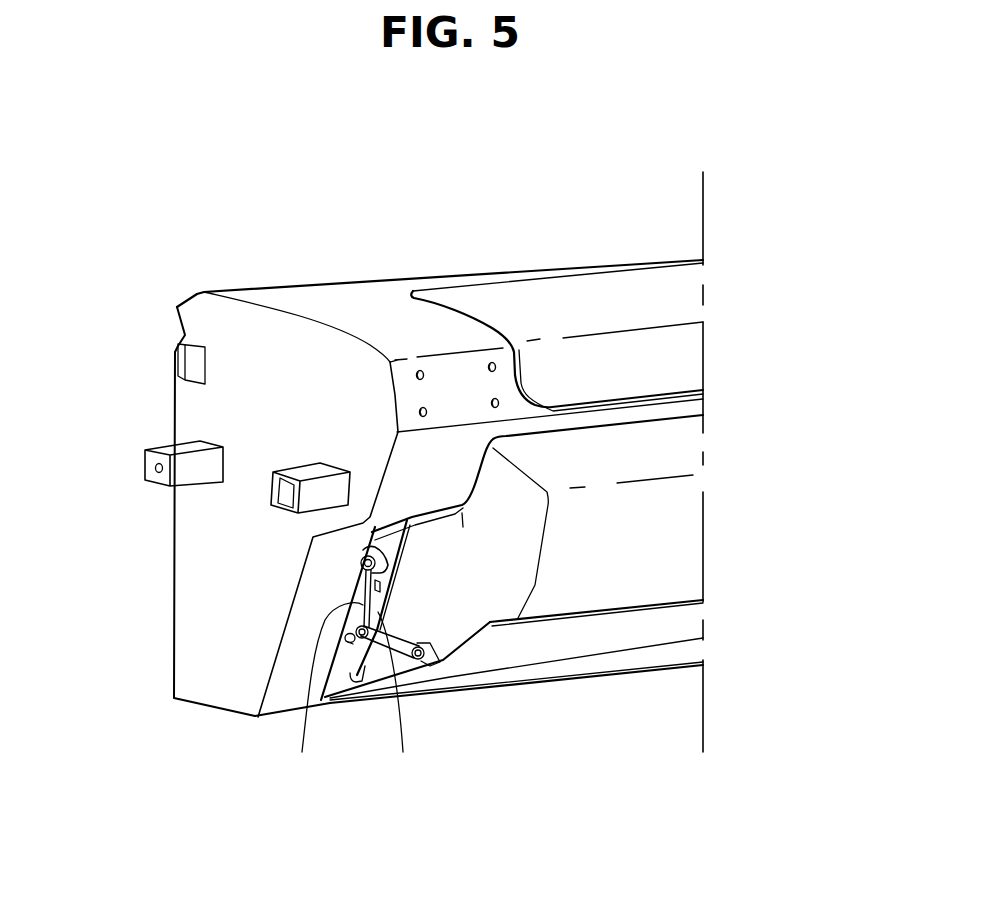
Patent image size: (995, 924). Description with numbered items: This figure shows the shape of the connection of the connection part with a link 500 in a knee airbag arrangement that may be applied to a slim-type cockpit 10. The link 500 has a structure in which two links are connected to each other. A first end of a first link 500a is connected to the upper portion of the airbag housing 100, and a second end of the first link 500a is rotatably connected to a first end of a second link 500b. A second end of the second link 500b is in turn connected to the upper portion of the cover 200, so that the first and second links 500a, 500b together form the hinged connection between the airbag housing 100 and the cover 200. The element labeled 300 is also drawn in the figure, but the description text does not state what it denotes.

The slim-type cockpit 10 is at (315, 280).
The airbag housing 100 is at (372, 530).
The cover 200 is at (600, 648).
The inner panel 300 is at (670, 535).
The link 500 is at (423, 787).
The first link 500a is at (334, 653).
The second link 500b is at (404, 706).